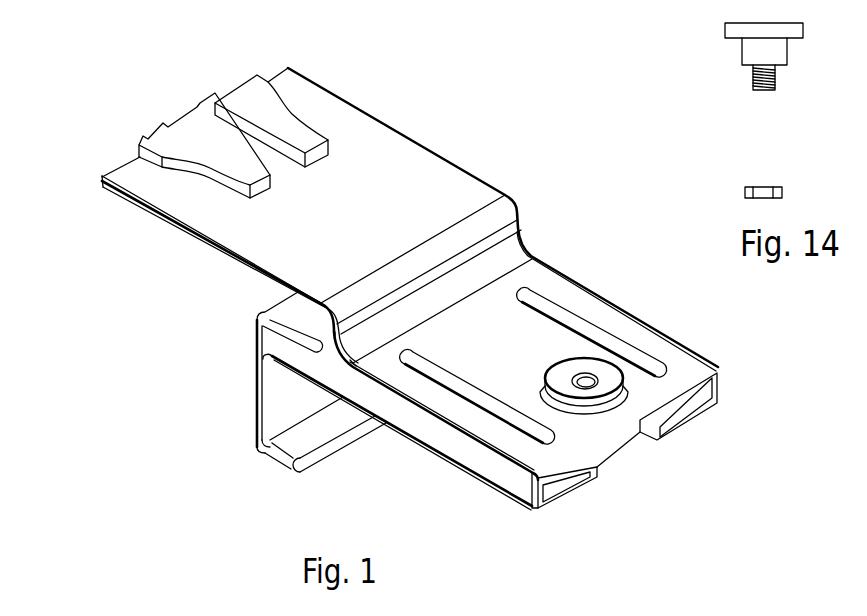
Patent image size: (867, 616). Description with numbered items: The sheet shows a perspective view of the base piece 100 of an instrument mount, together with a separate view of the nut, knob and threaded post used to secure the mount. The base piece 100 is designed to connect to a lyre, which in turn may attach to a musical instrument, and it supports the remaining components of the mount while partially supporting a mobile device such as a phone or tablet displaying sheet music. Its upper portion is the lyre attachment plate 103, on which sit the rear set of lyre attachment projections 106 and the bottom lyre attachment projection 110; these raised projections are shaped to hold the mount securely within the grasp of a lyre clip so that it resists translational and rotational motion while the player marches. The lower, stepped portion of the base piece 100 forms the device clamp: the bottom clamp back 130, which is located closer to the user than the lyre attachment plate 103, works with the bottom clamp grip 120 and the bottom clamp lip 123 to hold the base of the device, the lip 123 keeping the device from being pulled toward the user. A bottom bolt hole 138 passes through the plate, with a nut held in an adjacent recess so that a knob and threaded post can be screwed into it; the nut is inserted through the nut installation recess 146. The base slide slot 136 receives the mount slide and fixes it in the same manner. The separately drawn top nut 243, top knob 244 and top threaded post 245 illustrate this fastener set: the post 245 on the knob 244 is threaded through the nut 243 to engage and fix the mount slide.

In FIG. 1, the base piece 100 is at (328, 112).
In FIG. 1, the lyre attachment plate 103 is at (415, 158).
In FIG. 1, the rear set of lyre attachment projections 106 is at (253, 180).
In FIG. 1, the bottom lyre attachment projection 110 is at (143, 135).
In FIG. 1, the bottom clamp grip 120 is at (262, 367).
In FIG. 1, the bottom clamp lip 123 is at (273, 463).
In FIG. 1, the bottom clamp back 130 is at (542, 510).
In FIG. 1, the base slide slot 136 is at (673, 418).
In FIG. 1, the bottom bolt hole 138 is at (577, 383).
In FIG. 1, the nut installation recess 146 is at (607, 463).
In FIG. 14, the top nut 243 is at (750, 185).
In FIG. 14, the top knob 244 is at (742, 63).
In FIG. 14, the top threaded post 245 is at (750, 75).